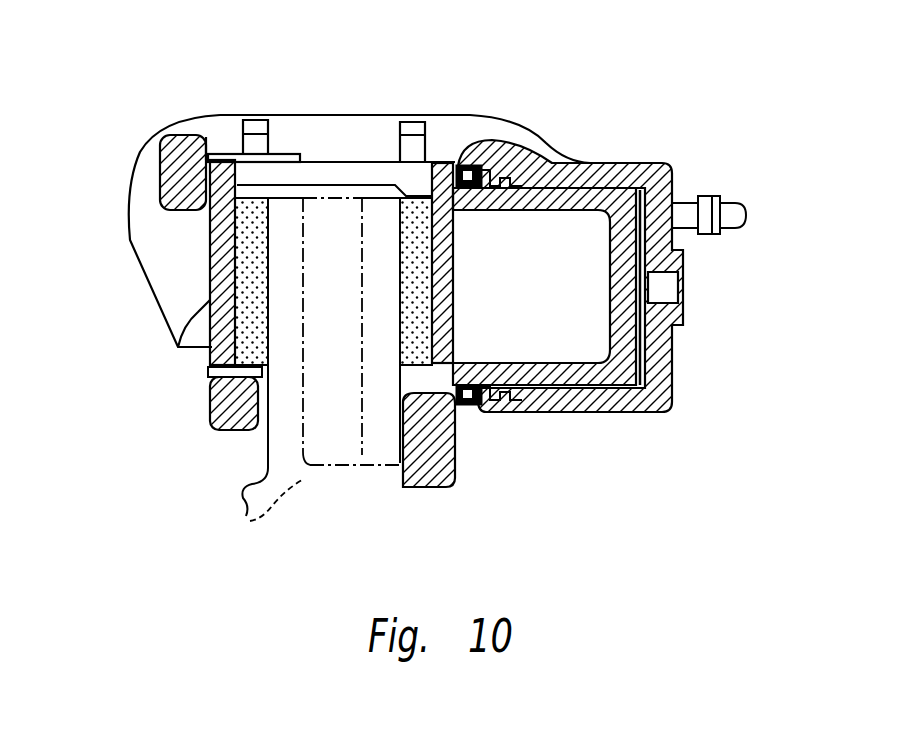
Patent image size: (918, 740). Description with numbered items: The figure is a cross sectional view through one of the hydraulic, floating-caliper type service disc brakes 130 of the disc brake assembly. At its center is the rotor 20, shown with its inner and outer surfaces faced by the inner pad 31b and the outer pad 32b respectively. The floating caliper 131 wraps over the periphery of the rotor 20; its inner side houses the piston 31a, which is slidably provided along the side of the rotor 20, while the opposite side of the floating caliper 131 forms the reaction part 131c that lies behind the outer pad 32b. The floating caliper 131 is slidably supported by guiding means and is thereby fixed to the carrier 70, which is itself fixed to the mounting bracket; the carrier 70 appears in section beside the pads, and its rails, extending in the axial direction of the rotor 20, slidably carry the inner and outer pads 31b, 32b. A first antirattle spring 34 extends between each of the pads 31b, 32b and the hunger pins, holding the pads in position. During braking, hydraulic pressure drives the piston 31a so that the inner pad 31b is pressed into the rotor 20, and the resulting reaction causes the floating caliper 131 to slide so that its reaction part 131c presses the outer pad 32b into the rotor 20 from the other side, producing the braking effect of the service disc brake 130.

The floating-caliper type service disc brake 130 is at (399, 277).
The floating caliper 131 is at (399, 228).
The reaction part 131c is at (158, 268).
The outer pad 32b is at (178, 347).
The first antirattle spring 34 is at (296, 153).
The inner piston 31a is at (548, 198).
The inner pad 31b is at (447, 292).
The rotor 20 is at (336, 452).
The carrier 70 is at (447, 456).